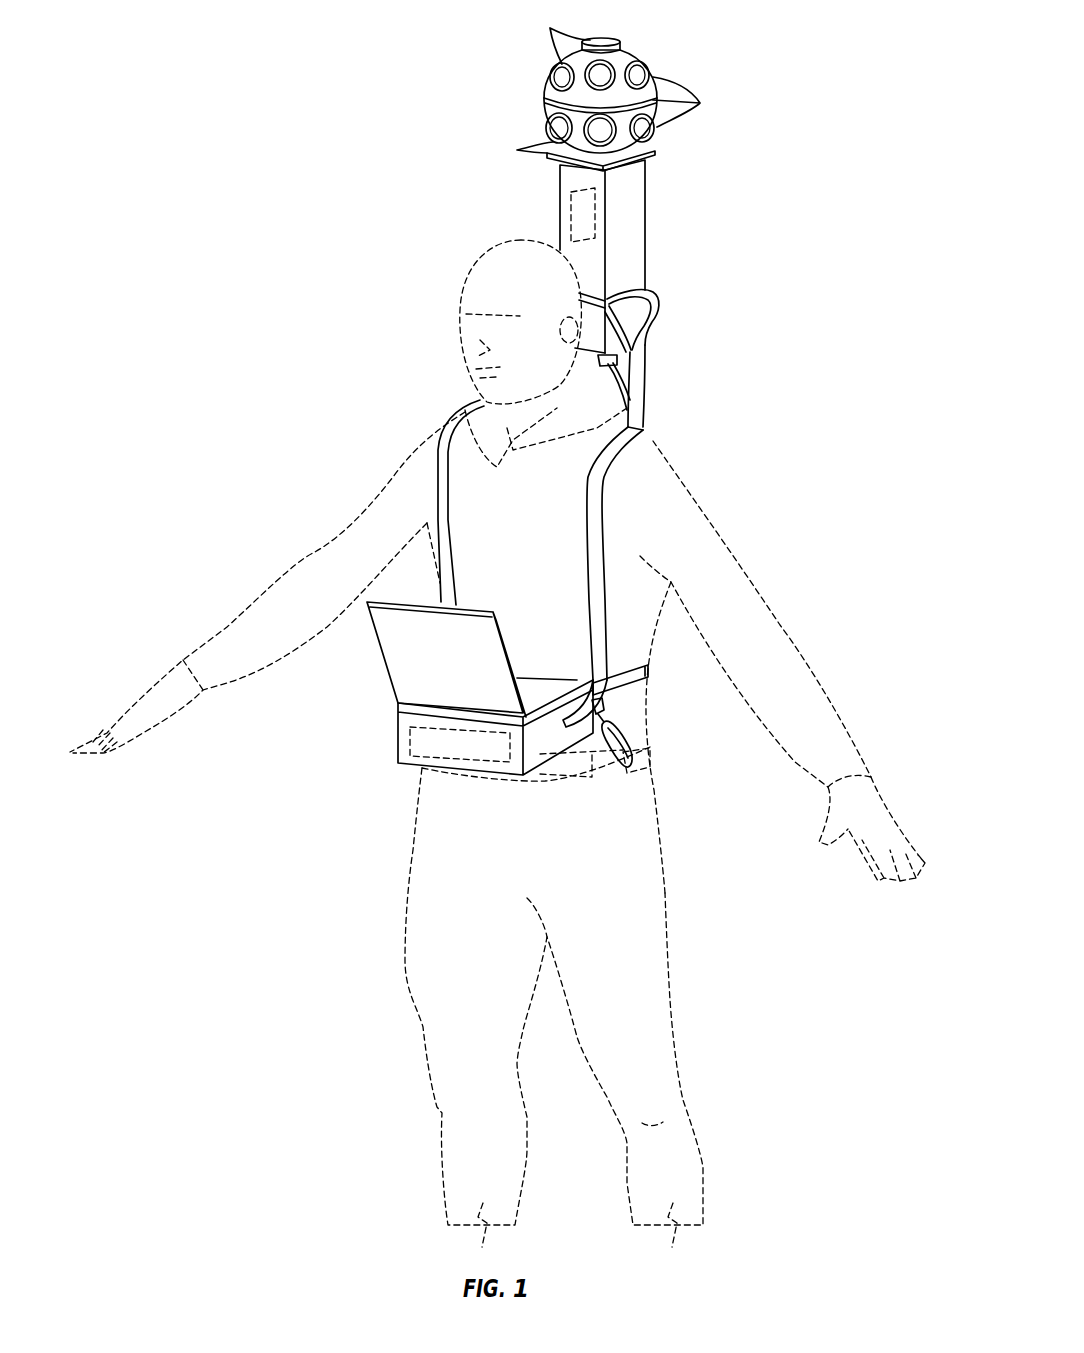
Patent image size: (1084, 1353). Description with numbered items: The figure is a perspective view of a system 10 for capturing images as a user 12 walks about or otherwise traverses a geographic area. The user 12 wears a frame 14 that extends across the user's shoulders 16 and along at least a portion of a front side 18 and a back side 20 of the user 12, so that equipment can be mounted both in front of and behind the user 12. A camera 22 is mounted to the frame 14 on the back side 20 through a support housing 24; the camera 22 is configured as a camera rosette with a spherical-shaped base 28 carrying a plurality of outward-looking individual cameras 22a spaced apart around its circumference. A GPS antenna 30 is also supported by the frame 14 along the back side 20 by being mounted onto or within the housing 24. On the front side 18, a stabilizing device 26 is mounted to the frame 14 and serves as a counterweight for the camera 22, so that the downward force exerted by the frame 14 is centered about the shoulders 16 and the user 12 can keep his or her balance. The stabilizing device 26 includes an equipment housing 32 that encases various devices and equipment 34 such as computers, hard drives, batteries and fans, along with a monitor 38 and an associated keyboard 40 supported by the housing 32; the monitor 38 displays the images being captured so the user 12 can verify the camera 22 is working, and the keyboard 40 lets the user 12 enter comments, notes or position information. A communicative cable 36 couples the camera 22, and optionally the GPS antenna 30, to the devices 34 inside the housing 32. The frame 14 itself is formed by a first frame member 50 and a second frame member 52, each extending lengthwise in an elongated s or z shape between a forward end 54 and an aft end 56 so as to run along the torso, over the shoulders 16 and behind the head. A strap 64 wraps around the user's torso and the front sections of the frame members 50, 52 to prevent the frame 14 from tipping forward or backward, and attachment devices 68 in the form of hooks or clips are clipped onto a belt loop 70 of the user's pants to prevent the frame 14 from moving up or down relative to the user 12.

The system 10 is at (189, 209).
The user 12 is at (482, 258).
The frame 14 is at (734, 416).
The shoulders 16 is at (524, 558).
The front side 18 is at (437, 512).
The back side 20 is at (655, 634).
The camera 22 is at (606, 83).
The individual cameras 22a is at (550, 28).
The support housing 24 is at (606, 258).
The stabilizing device 26 is at (443, 717).
The spherical-shaped base 28 is at (548, 97).
The GPS antenna 30 is at (570, 204).
The equipment housing 32 is at (479, 746).
The devices/equipment 34 is at (450, 760).
The communicative cable 36 is at (625, 378).
The monitor 38 is at (408, 662).
The keyboard 40 is at (548, 700).
The first frame member 50 is at (604, 530).
The second frame member 52 is at (436, 466).
The forward end 54 is at (600, 709).
The aft end 56 is at (650, 300).
The strap 64 is at (648, 678).
The attachment devices 68 is at (602, 775).
The belt loop 70 is at (637, 775).